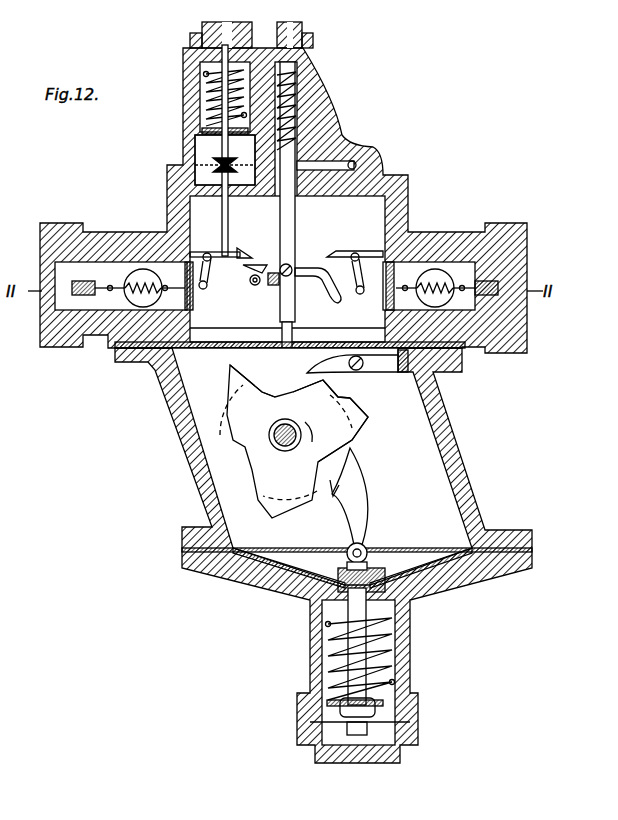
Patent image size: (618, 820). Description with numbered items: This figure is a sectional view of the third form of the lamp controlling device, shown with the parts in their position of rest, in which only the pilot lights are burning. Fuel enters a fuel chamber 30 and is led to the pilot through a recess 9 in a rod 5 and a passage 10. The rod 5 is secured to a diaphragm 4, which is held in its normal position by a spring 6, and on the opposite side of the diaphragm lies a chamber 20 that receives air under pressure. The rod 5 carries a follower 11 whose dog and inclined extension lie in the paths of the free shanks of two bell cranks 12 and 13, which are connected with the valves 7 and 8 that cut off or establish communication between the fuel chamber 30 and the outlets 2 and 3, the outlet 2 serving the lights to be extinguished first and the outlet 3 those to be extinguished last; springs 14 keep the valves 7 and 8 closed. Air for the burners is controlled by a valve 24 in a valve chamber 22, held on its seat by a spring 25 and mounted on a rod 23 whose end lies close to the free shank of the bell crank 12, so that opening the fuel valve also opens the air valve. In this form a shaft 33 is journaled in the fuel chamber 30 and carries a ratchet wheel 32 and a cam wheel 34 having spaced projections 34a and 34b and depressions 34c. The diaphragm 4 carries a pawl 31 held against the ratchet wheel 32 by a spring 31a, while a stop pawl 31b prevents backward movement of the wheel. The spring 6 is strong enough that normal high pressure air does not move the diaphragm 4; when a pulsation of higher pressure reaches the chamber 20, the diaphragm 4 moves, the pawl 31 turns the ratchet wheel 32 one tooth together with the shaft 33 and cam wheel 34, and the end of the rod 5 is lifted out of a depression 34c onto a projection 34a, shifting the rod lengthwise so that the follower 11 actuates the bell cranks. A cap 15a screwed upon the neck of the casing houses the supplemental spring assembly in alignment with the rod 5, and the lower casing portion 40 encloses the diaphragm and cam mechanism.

The outlet 2 is at (143, 270).
The outlet 3 is at (435, 270).
The diaphragm 4 is at (416, 570).
The rod 5 is at (283, 302).
The spring 6 is at (330, 655).
The valve 7 is at (388, 292).
The valve 8 is at (192, 292).
The channel or recess 9 is at (300, 203).
The passage 10 is at (332, 165).
The follower 11 is at (300, 265).
The bell crank 12 is at (241, 262).
The bell crank 13 is at (343, 255).
The spring 14 is at (108, 336).
The cap 15a is at (405, 718).
The chamber 20 is at (292, 578).
The valve chamber 22 is at (180, 156).
The rod 23 is at (229, 220).
The valve 24 is at (200, 129).
The spring 25 is at (205, 90).
The fuel chamber 30 is at (375, 205).
The pawl 31 is at (368, 494).
The spring 31a is at (377, 538).
The stop pawl 31b is at (336, 356).
The ratchet wheel 32 is at (334, 488).
The shaft 33 is at (302, 436).
The cam-wheel 34 is at (272, 507).
The projection 34a is at (345, 386).
The projection 34b is at (372, 415).
The depression 34c is at (245, 392).
The lower housing 40 is at (440, 468).